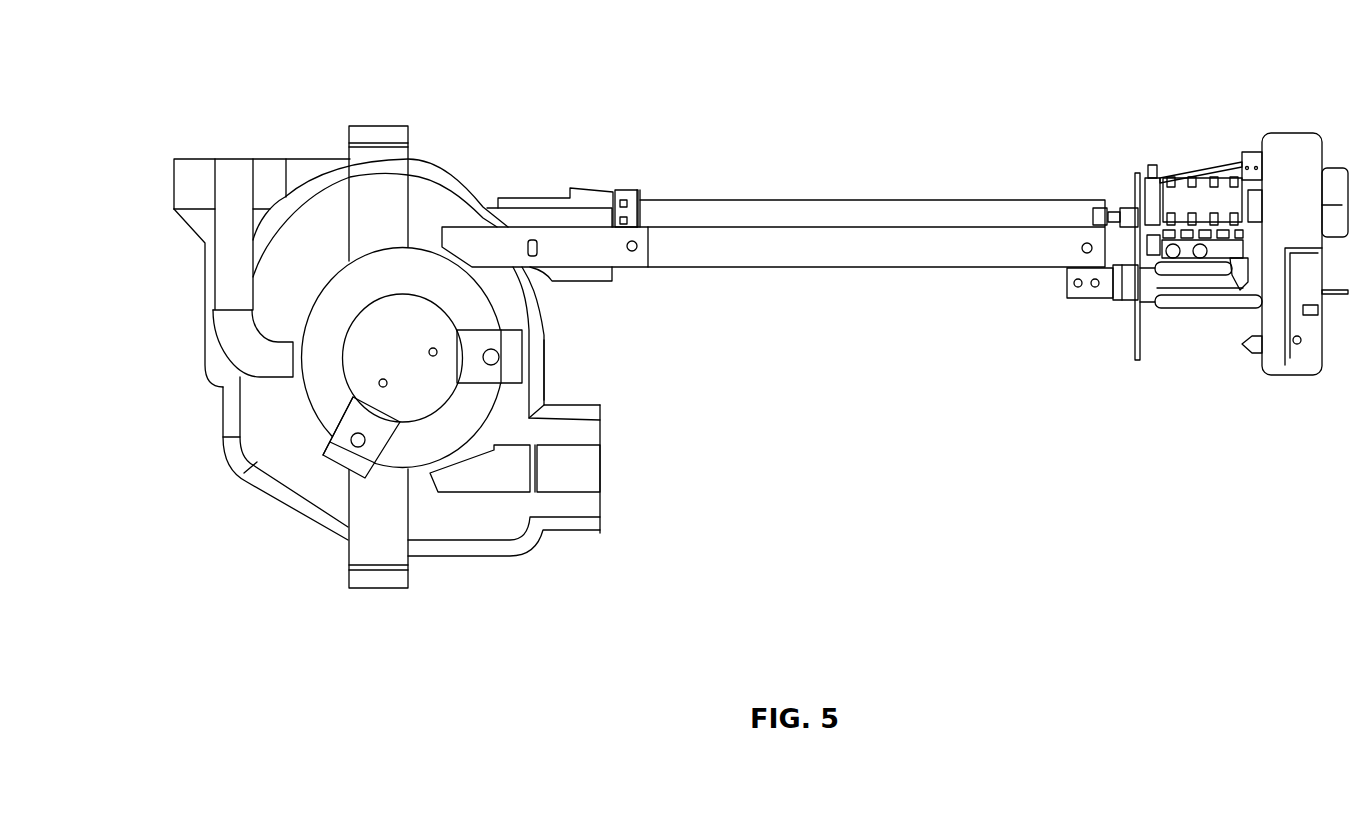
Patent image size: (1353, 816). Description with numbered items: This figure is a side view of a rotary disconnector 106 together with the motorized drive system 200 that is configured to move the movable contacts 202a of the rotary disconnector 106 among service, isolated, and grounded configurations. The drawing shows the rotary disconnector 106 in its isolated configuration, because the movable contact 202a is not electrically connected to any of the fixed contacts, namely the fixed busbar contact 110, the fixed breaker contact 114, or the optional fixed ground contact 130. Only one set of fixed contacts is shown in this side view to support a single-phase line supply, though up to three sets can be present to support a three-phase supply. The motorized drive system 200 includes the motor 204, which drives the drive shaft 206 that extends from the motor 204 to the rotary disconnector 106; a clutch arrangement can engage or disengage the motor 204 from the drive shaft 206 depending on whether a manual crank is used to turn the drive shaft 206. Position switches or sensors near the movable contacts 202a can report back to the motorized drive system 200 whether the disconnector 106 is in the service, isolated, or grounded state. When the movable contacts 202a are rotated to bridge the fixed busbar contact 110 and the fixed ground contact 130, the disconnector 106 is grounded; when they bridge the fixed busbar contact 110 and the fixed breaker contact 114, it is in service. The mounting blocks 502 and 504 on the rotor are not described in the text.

The rotary disconnector 106 is at (236, 50).
The fixed busbar contact 110 is at (225, 259).
The fixed breaker contact 114 is at (590, 470).
The fixed ground contact 130 is at (562, 243).
The motorized drive system 200 is at (1227, 138).
The movable contact 202a is at (542, 343).
The motor 204 is at (1187, 158).
The drive shaft 206 is at (790, 218).
The mounting block 502 is at (320, 475).
The mounting block 504 is at (497, 358).